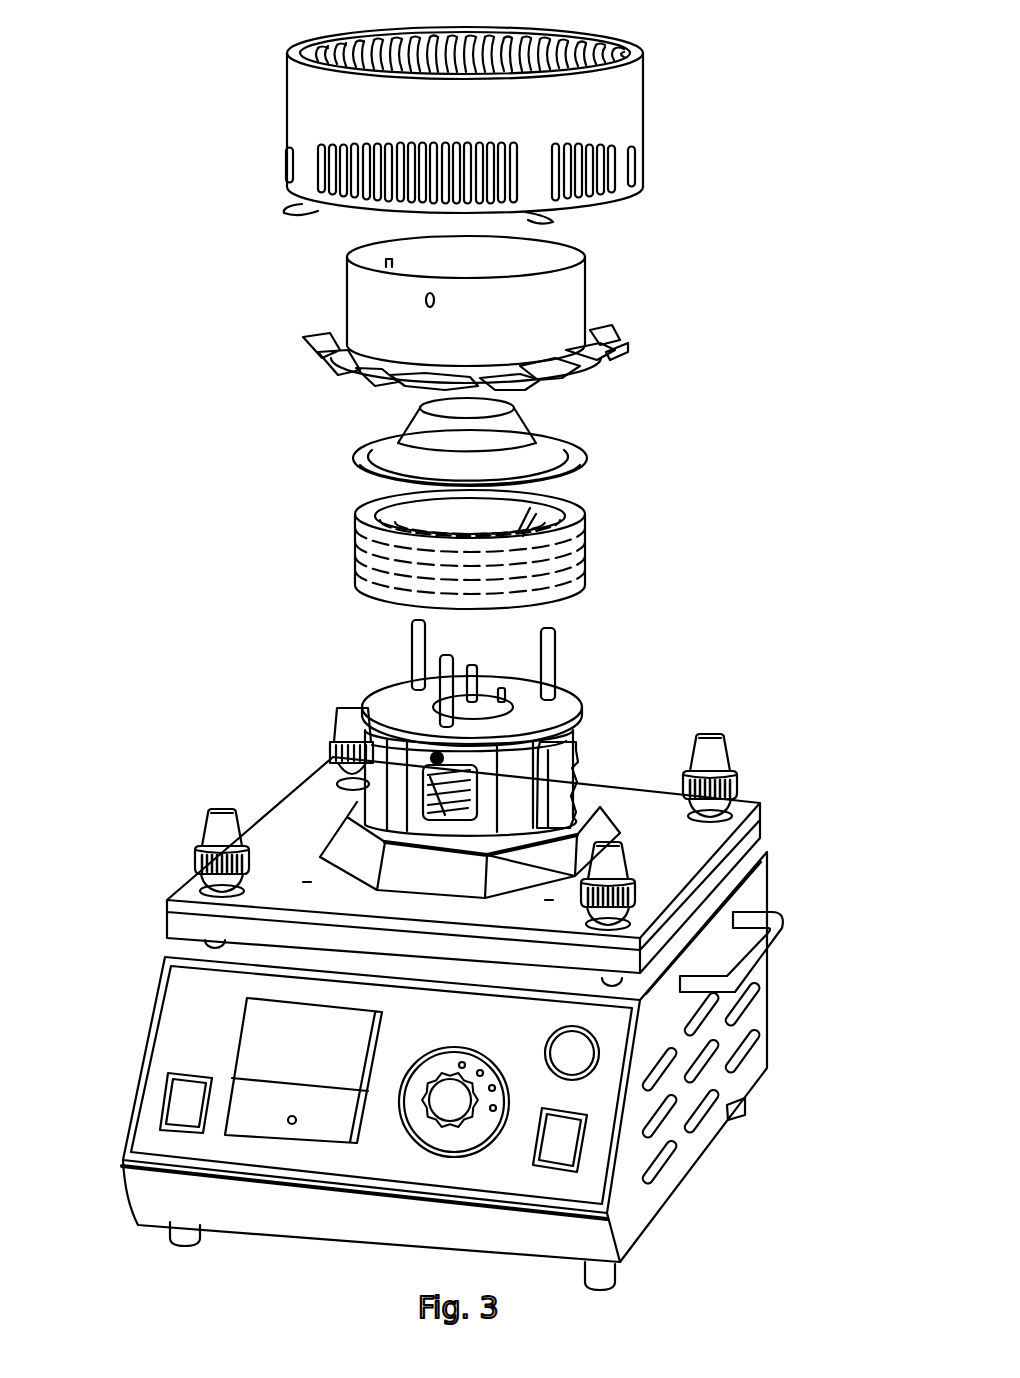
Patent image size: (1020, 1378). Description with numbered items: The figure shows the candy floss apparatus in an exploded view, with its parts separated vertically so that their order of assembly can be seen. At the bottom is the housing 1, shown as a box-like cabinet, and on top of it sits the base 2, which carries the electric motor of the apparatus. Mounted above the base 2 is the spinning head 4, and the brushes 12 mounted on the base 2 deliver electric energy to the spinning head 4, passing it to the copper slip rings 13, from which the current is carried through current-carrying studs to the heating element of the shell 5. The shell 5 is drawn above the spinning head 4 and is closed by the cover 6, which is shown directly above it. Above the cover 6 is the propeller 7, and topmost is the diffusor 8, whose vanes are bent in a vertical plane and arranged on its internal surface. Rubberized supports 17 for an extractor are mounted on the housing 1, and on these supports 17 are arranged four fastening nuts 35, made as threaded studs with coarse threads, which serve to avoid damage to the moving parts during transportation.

The housing 1 is at (760, 1058).
The base 2 is at (178, 920).
The spinning head 4 is at (568, 698).
The shell 5 is at (580, 550).
The cover 6 is at (527, 421).
The propeller 7 is at (370, 306).
The diffusor 8 is at (318, 103).
The brushes 12 is at (575, 758).
The copper slip rings 13 is at (440, 775).
The rubberized supports 17 is at (210, 835).
The fastening nuts 35 is at (735, 775).